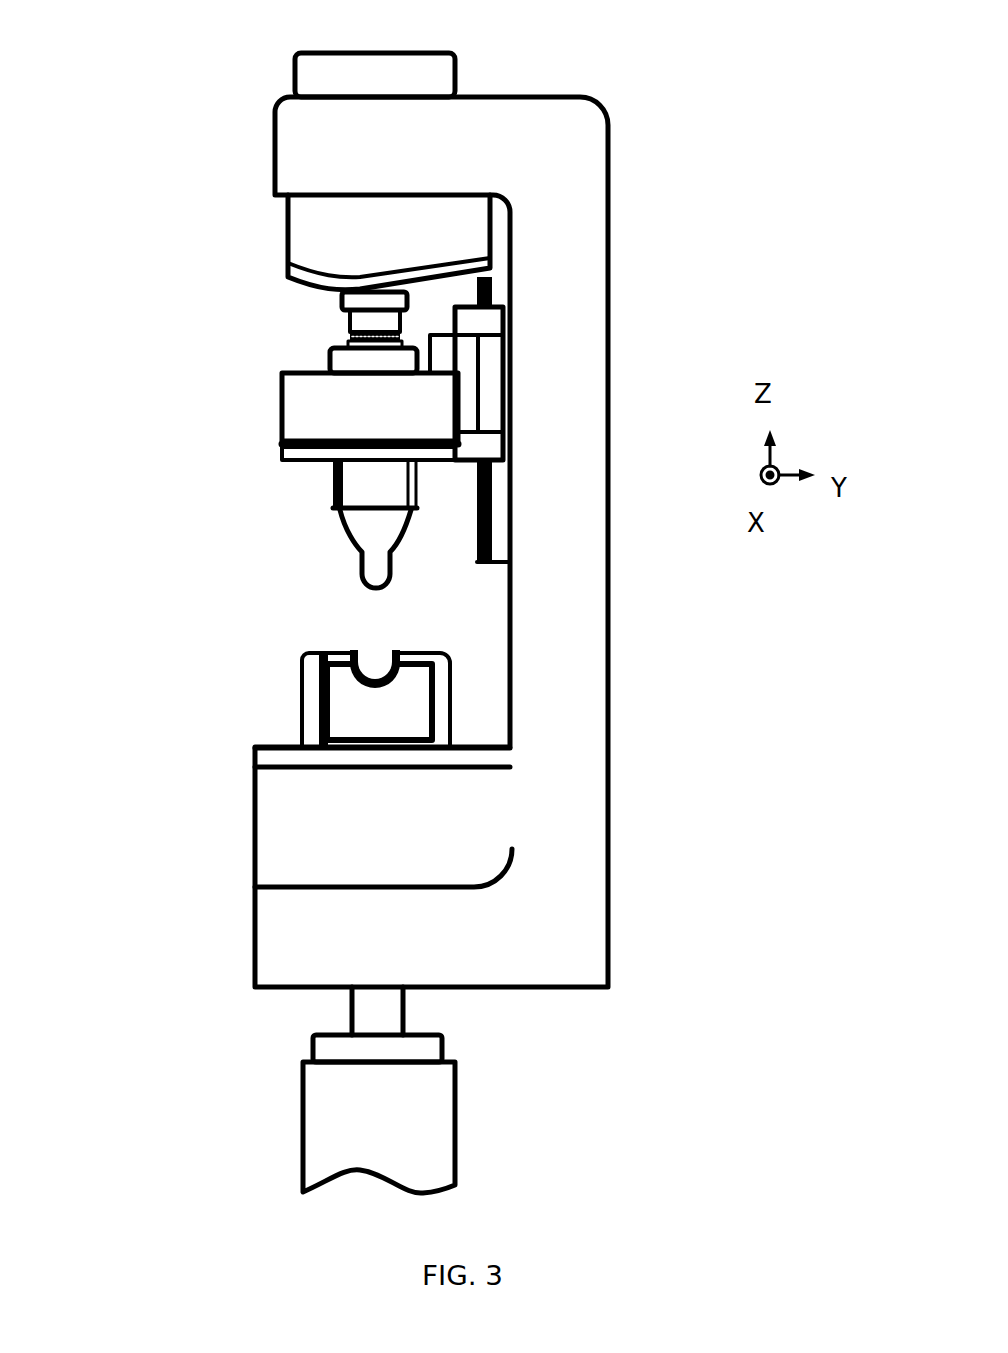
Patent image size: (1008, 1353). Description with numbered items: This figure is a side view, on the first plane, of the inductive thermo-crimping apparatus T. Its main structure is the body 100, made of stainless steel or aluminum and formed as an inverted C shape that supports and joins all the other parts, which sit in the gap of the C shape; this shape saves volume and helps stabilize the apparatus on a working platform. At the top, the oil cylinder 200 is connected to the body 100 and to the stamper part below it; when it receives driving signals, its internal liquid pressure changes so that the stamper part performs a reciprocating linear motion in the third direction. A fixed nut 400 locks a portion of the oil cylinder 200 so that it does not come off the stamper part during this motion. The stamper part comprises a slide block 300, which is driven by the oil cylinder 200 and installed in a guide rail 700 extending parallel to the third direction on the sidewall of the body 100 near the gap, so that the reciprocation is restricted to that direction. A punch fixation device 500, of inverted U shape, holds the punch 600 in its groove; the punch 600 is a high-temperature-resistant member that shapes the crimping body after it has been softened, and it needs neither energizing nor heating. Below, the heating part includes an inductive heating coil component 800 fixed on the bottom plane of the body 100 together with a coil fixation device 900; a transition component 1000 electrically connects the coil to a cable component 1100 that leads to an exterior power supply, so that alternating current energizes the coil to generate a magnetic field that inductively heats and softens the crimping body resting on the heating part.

The inductive thermo-crimping apparatus T is at (134, 99).
The body 100 is at (315, 160).
The oil cylinder 200 is at (315, 238).
The slide block 300 is at (492, 370).
The fixed nut 400 is at (362, 318).
The punch fixation device 500 is at (372, 408).
The punch 600 is at (372, 492).
The guide rail 700 is at (500, 535).
The inductive heating coil component 800 is at (315, 693).
The coil fixation device 900 is at (315, 822).
The transition component 1000 is at (372, 1008).
The cable component 1100 is at (378, 1125).